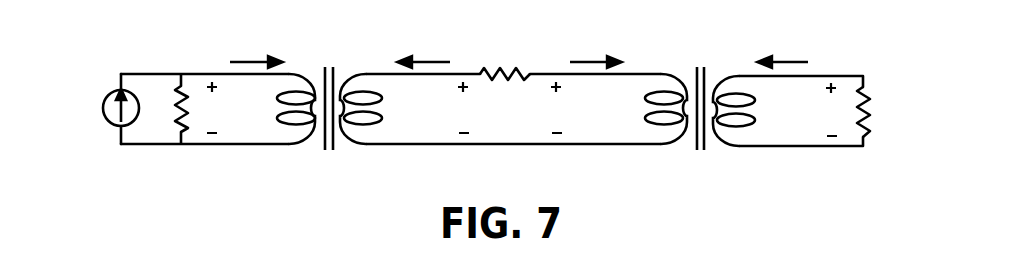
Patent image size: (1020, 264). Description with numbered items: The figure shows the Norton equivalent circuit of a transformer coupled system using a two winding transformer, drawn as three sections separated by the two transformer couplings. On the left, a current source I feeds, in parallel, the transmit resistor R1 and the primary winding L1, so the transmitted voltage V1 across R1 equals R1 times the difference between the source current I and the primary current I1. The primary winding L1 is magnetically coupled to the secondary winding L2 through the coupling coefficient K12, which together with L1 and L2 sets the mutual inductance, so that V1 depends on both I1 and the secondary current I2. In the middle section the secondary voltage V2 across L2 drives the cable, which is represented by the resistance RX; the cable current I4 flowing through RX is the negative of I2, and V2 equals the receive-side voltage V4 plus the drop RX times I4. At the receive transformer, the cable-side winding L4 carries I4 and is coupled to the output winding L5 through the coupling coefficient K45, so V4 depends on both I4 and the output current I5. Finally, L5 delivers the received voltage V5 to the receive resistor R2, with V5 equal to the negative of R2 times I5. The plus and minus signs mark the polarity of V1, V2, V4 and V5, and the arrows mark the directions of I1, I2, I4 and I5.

The source current I is at (116, 107).
The transmit resistor R1 is at (167, 109).
The primary voltage V1 is at (210, 107).
The primary winding L1 is at (281, 109).
The primary current I1 is at (256, 53).
The transmit transformer coupling coefficient K12 is at (330, 94).
The secondary current I2 is at (423, 53).
The secondary winding L2 is at (376, 109).
The secondary voltage V2 is at (462, 107).
The cable resistance RX is at (505, 61).
The receive primary voltage V4 is at (554, 107).
The cable current I4 is at (596, 53).
The receive transformer primary winding L4 is at (651, 109).
The receive transformer coupling coefficient K45 is at (699, 94).
The receive transformer secondary winding L5 is at (749, 111).
The receive secondary current I5 is at (782, 53).
The received voltage V5 is at (829, 109).
The receive resistor R2 is at (878, 112).